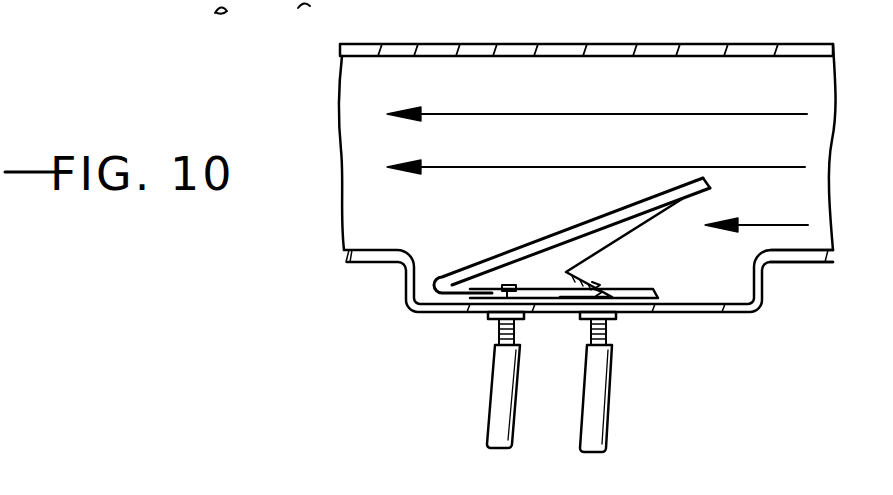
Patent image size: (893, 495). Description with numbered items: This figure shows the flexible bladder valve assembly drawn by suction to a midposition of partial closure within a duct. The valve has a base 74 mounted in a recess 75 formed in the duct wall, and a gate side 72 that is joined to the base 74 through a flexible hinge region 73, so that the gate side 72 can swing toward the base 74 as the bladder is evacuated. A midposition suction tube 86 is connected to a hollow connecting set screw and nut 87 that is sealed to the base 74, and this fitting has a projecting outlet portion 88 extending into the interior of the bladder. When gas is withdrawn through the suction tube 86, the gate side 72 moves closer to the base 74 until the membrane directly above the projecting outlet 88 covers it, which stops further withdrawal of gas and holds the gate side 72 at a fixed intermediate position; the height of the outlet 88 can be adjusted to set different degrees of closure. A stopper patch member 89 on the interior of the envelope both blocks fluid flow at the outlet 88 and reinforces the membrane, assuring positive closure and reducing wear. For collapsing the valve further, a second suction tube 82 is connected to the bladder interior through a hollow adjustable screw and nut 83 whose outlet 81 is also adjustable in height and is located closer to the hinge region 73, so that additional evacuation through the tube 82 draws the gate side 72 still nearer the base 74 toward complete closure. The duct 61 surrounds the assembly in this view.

The duct wall 61 is at (540, 44).
The gate side 72 is at (619, 207).
The hinge region 73 is at (422, 283).
The base 74 is at (557, 302).
The recess 75 is at (763, 284).
The outlet 81 is at (507, 285).
The suction tube 82 is at (492, 402).
The hollow adjustable screw and nut 83 is at (495, 330).
The midposition suction tube 86 is at (612, 398).
The hollow connecting set screw and nut 87 is at (612, 328).
The projecting outlet portion 88 is at (645, 290).
The stopper patch member 89 is at (606, 282).